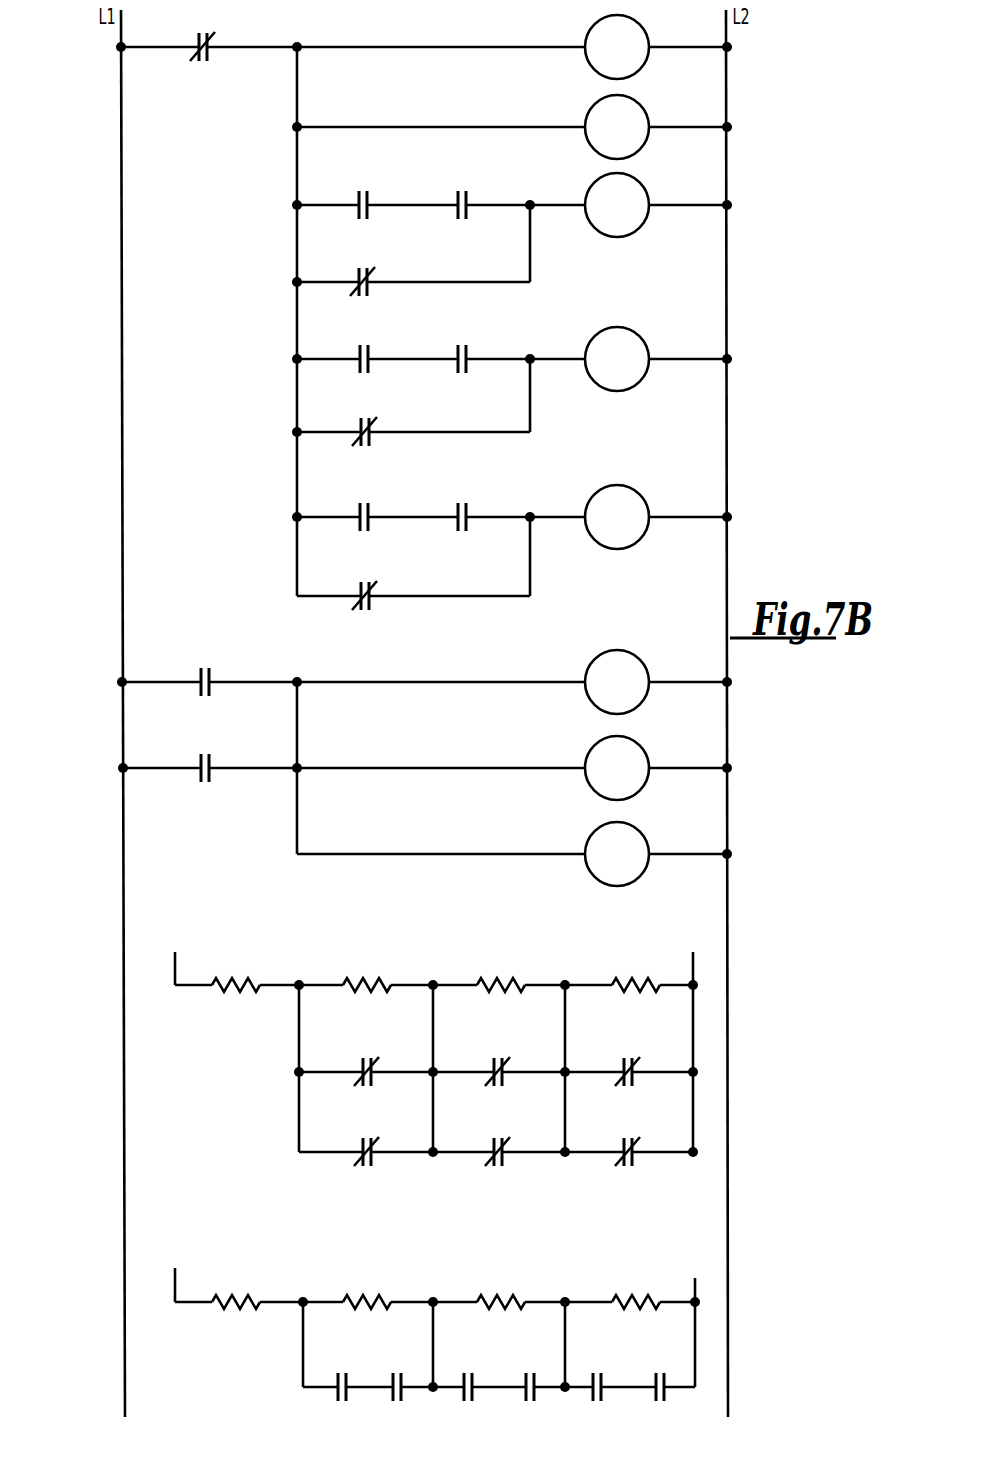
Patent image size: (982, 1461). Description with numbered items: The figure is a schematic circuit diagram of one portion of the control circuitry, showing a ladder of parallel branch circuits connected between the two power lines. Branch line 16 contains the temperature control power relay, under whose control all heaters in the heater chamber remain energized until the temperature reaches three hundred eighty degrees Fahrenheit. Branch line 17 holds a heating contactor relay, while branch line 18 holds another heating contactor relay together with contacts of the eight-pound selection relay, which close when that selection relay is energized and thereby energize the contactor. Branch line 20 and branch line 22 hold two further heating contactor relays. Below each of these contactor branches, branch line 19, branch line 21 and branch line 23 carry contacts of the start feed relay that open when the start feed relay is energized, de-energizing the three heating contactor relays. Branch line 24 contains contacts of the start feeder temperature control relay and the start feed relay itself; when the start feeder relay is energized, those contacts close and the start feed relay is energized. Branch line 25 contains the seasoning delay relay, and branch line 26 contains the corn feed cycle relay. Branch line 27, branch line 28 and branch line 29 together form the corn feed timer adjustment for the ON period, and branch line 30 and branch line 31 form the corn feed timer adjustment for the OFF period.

The branch line 16 is at (403, 42).
The branch line 17 is at (403, 127).
The branch line 18 is at (403, 199).
The branch line 19 is at (302, 250).
The branch line 20 is at (403, 353).
The branch line 21 is at (302, 402).
The branch line 22 is at (403, 511).
The branch line 23 is at (302, 563).
The branch line 24 is at (403, 676).
The branch line 25 is at (403, 762).
The branch line 26 is at (403, 854).
The branch line 27 is at (386, 974).
The branch line 28 is at (386, 1057).
The branch line 29 is at (386, 1137).
The branch line 30 is at (387, 1291).
The branch line 31 is at (384, 1372).